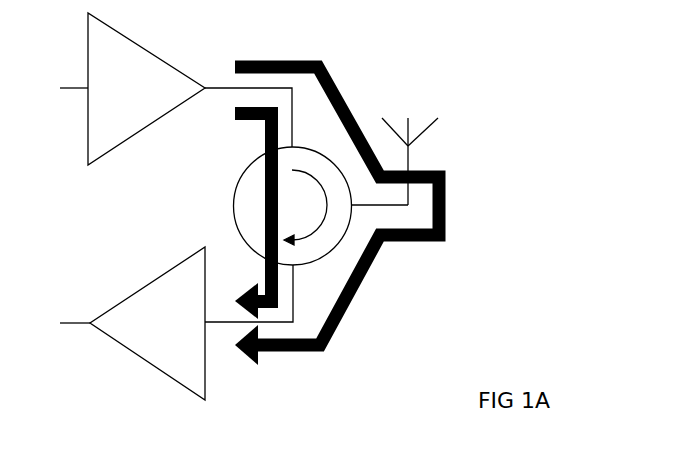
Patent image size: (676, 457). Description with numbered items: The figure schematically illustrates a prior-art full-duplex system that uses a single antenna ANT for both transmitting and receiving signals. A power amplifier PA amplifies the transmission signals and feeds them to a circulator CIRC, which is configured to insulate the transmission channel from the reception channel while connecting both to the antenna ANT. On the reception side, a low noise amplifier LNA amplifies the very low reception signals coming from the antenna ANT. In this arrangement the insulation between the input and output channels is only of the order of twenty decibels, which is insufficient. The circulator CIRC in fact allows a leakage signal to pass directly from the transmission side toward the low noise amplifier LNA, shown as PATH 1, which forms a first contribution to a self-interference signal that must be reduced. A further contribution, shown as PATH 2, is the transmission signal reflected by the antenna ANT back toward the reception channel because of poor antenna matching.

The power amplifier PA is at (176, 89).
The low noise amplifier LNA is at (176, 323).
The circulator CIRC is at (338, 245).
The antenna ANT is at (412, 158).
The leakage signal path PATH 1 is at (197, 217).
The antenna reflection path PATH 2 is at (333, 194).